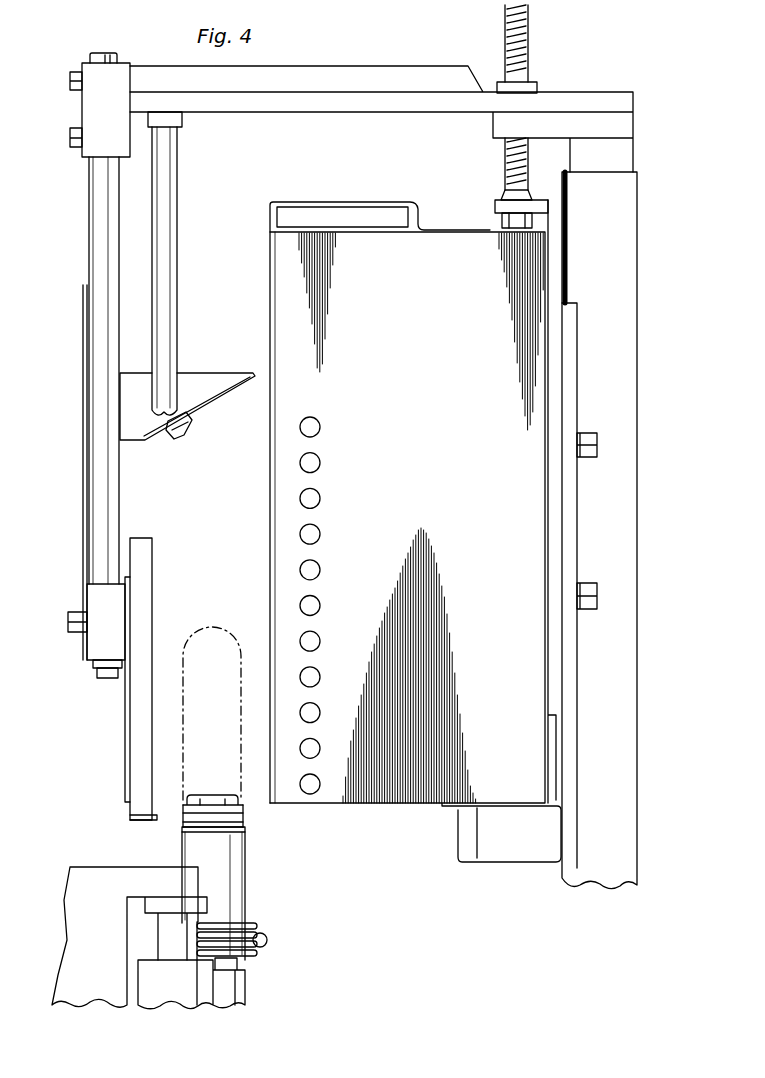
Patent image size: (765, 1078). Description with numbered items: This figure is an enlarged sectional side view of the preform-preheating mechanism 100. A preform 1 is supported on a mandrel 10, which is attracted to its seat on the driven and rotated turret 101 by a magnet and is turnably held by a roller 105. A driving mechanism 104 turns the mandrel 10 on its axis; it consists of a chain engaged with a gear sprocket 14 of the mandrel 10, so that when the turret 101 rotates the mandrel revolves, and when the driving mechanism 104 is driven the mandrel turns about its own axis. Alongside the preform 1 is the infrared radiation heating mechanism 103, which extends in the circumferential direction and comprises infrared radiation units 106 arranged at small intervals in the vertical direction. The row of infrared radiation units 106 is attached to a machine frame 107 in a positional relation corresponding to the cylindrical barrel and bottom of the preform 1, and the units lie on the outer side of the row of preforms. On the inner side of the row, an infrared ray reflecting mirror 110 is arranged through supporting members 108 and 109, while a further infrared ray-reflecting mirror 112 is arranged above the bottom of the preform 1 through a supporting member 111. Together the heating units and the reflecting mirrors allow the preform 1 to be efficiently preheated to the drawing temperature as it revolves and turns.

The preform 1 is at (185, 736).
The mandrel 10 is at (248, 843).
The gear sprocket 14 is at (236, 926).
The preform-preheating mechanism 100 is at (548, 72).
The turret 101 is at (102, 865).
The infrared radiation heating mechanism 103 is at (370, 194).
The driving mechanism 104 is at (270, 940).
The roller 105 is at (200, 990).
The infrared radiation units 106 is at (318, 535).
The machine frame 107 is at (617, 398).
The supporting member 108 is at (300, 110).
The supporting member 109 is at (97, 255).
The infrared ray reflecting mirror 110 is at (133, 706).
The supporting member 111 is at (172, 262).
The infrared ray-reflecting mirror 112 is at (212, 406).